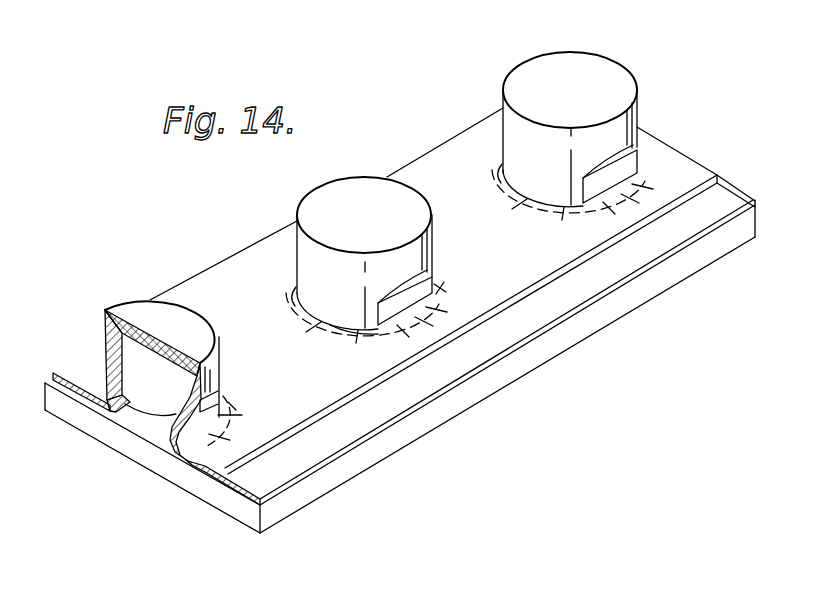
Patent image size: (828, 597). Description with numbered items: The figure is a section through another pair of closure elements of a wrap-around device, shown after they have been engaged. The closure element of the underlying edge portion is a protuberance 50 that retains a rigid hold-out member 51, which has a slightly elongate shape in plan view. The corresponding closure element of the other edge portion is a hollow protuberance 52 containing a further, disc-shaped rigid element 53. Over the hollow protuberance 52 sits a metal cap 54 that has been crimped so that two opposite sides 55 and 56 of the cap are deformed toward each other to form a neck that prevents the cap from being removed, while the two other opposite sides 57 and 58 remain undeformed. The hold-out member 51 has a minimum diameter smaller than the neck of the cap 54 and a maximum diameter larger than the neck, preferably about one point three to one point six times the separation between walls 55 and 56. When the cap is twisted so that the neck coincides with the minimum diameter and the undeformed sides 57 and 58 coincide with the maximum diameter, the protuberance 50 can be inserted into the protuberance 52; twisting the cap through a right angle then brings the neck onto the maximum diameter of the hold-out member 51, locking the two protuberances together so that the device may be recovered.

The protuberance 50 is at (173, 347).
The rigid hold-out member 51 is at (157, 378).
The hollow protuberance 52 is at (133, 327).
The rigid element 53 is at (108, 332).
The metal cap 54 is at (190, 313).
The side of the cap 55 is at (207, 455).
The side of the cap 56 is at (110, 378).
The undeformed side of the cap 57 is at (340, 300).
The undeformed side of the cap 58 is at (437, 278).